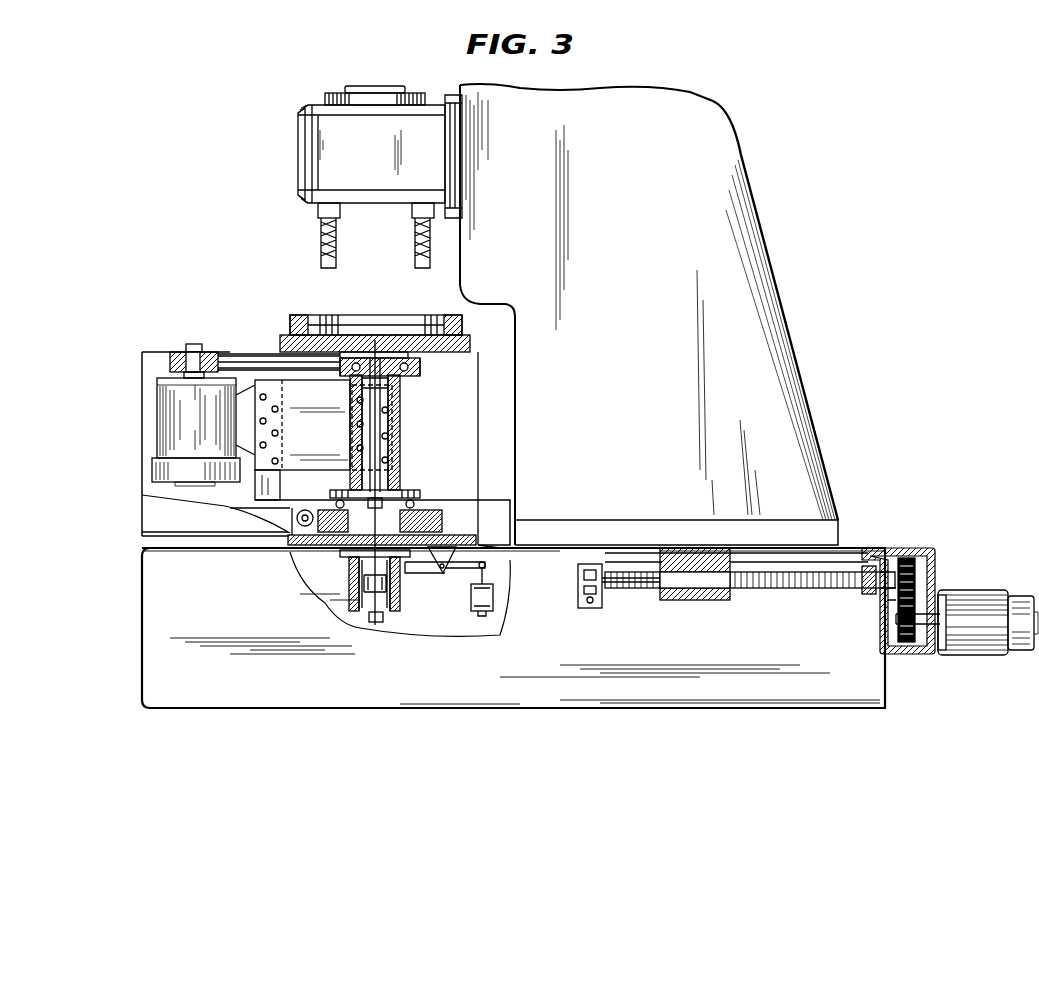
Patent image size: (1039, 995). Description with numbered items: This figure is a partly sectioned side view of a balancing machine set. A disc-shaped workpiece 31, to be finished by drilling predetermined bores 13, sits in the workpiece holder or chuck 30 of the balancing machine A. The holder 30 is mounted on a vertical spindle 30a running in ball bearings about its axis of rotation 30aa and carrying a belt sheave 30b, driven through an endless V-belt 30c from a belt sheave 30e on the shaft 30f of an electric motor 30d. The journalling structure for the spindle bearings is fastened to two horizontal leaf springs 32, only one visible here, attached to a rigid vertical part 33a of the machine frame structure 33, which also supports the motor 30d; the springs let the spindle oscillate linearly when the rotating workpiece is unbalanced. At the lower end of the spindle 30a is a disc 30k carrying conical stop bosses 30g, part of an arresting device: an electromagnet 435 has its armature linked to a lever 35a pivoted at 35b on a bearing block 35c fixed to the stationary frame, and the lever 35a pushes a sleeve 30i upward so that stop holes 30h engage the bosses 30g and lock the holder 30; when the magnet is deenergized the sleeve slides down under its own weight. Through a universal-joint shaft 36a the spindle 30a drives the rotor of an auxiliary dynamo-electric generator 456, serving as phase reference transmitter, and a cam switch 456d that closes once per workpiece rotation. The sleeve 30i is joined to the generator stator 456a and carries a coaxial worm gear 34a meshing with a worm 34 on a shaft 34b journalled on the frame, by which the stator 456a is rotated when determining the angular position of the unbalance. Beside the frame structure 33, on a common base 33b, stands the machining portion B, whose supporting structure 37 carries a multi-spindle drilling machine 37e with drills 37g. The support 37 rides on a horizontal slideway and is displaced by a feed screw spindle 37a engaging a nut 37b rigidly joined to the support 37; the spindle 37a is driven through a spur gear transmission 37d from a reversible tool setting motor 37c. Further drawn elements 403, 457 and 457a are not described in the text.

The supporting structure 37 is at (780, 320).
The multi-spindle drilling machine 37e is at (298, 152).
The drills 37g is at (412, 252).
The predetermined bores 13 is at (378, 295).
The disc-shaped workpiece 31 is at (462, 322).
The workpiece holder or chuck 30 is at (292, 330).
The machine frame structure 33 is at (143, 506).
The rigid vertical part of the machine frame structure 33a is at (258, 488).
The common base 33b is at (143, 557).
The worm 34 is at (290, 540).
The worm gear 34a is at (440, 512).
The shaft 34b is at (288, 512).
The electric motor 30d is at (157, 410).
The belt sheave 30e is at (170, 362).
The shaft 30f is at (190, 344).
The endless V-belt 30c is at (236, 354).
The vertical spindle 30a is at (400, 382).
The axis of rotation 30aa is at (362, 384).
The belt sheave 30b is at (420, 366).
The mounting plate 403 is at (400, 410).
The horizontal leaf springs 32 is at (318, 462).
The disc 30k is at (405, 490).
The conical stop bosses 30g is at (416, 500).
The stop holes 30h is at (410, 524).
The Cardanic (universal-joint) shaft 36a is at (345, 528).
The bearing block 35c is at (445, 562).
The sleeve 30i is at (350, 562).
The auxiliary dynamo-electric generator 456 is at (352, 580).
The stator 456a is at (345, 612).
The cam switch 456d is at (380, 622).
The lever 35a is at (425, 573).
The pivot 35b is at (442, 575).
The electromagnet 435 is at (493, 603).
The feed screw spindle 37a is at (770, 588).
The nut 37b is at (702, 600).
The limit switch 457 is at (590, 608).
The switch rod 457a is at (592, 572).
The spur gear transmission 37d is at (905, 556).
The tool setting motor 37c is at (968, 592).